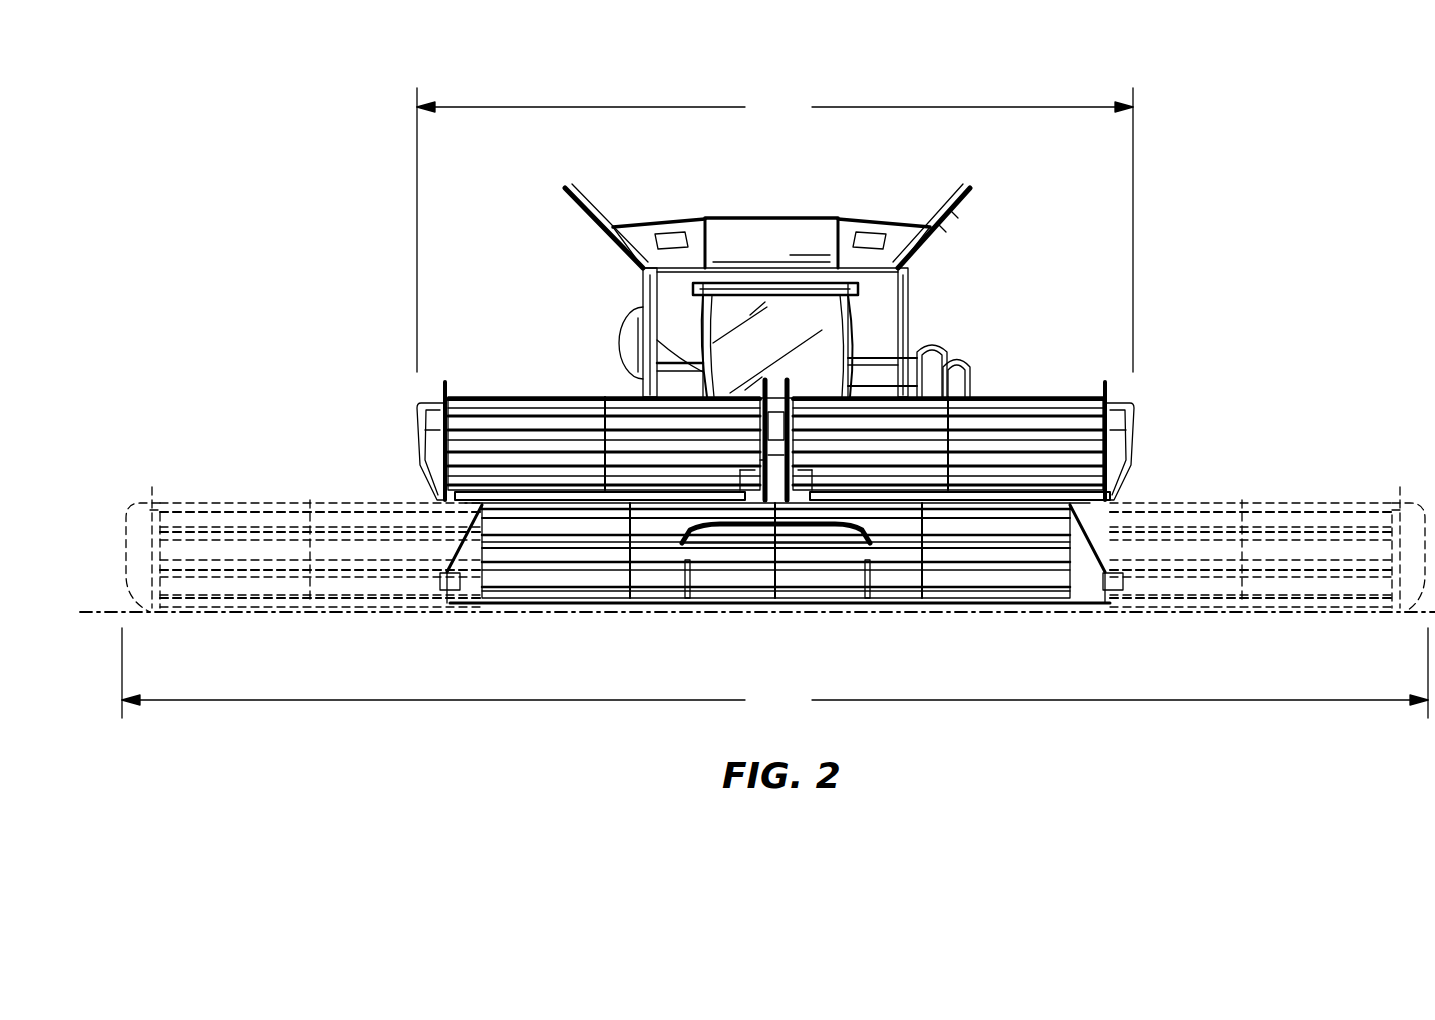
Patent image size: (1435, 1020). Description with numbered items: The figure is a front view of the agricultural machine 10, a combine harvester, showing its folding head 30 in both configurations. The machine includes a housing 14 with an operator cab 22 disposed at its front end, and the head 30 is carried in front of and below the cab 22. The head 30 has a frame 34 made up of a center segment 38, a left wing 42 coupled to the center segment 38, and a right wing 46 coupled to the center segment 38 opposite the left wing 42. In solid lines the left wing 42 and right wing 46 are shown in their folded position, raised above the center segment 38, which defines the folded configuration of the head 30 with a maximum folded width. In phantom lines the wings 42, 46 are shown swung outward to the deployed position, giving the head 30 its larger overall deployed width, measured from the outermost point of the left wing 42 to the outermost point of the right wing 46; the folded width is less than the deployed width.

The agricultural machine 10 is at (1050, 245).
The housing 14 is at (910, 322).
The operator cab 22 is at (683, 327).
The head 30 is at (1158, 421).
The frame 34 is at (390, 421).
The center segment 38 is at (585, 598).
The left wing 42 is at (1033, 392).
The right wing 46 is at (535, 392).